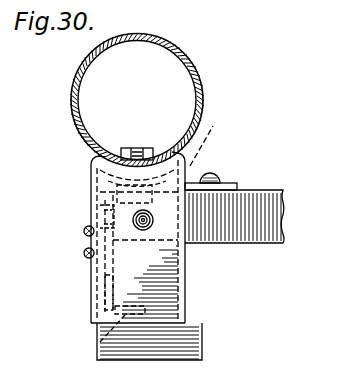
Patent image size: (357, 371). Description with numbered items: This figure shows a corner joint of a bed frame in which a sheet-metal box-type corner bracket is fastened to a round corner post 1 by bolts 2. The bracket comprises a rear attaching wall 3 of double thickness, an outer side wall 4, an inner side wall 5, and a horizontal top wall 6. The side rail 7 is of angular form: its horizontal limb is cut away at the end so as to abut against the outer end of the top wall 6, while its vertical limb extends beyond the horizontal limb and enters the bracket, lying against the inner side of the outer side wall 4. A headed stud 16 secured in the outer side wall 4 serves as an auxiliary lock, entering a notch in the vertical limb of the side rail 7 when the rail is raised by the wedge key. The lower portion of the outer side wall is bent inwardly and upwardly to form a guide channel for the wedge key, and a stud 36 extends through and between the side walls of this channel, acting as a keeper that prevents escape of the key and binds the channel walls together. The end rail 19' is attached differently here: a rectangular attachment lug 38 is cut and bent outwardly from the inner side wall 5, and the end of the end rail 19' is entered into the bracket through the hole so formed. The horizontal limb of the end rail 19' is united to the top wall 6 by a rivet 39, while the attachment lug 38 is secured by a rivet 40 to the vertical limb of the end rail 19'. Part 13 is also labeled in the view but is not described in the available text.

The corner post 1 is at (201, 73).
The bolts 2 is at (134, 149).
The rear attaching wall 3 is at (207, 140).
The outer side wall 4 is at (88, 295).
The inner side wall 5 is at (186, 287).
The top wall 6 is at (127, 267).
The side rail 7 is at (203, 340).
The bolt 13 is at (100, 342).
The headed stud 16 is at (107, 218).
The end rail 19' is at (253, 213).
The stud 36 is at (85, 252).
The attachment lug 38 is at (235, 182).
The rivet 39 is at (152, 228).
The rivet 40 is at (210, 168).